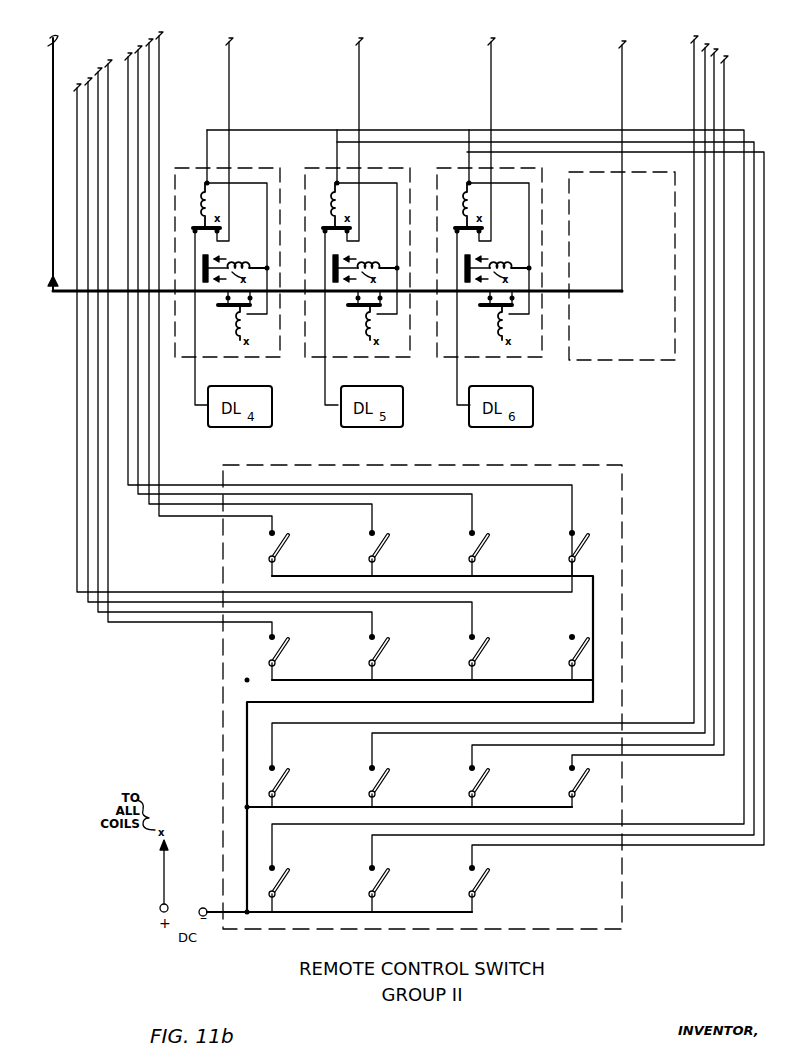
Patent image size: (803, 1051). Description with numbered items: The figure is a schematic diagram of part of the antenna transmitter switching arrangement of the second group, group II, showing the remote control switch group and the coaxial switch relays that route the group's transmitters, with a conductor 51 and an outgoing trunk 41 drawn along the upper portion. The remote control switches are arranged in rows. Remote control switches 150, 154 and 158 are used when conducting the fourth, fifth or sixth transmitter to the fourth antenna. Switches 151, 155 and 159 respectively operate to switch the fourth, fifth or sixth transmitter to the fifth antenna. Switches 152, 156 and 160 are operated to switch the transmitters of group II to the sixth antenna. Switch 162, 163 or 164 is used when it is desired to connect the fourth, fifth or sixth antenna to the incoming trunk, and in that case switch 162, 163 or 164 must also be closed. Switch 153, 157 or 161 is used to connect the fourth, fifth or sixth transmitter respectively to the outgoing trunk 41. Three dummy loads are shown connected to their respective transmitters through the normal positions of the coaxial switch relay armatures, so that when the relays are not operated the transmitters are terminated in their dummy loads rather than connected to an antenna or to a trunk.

The outgoing trunk 41 is at (56, 40).
The common conductor 51 is at (55, 293).
The remote control switch 150 is at (270, 542).
The switch 151 is at (269, 652).
The switch 152 is at (274, 764).
The switch 153 is at (274, 864).
The remote control switch 154 is at (370, 548).
The switch 155 is at (370, 652).
The switch 156 is at (370, 781).
The switch 157 is at (370, 881).
The remote control switch 158 is at (470, 548).
The switch 159 is at (470, 652).
The switch 160 is at (470, 781).
The switch 161 is at (470, 881).
The switch 162 is at (570, 548).
The switch 163 is at (570, 652).
The switch 164 is at (570, 781).